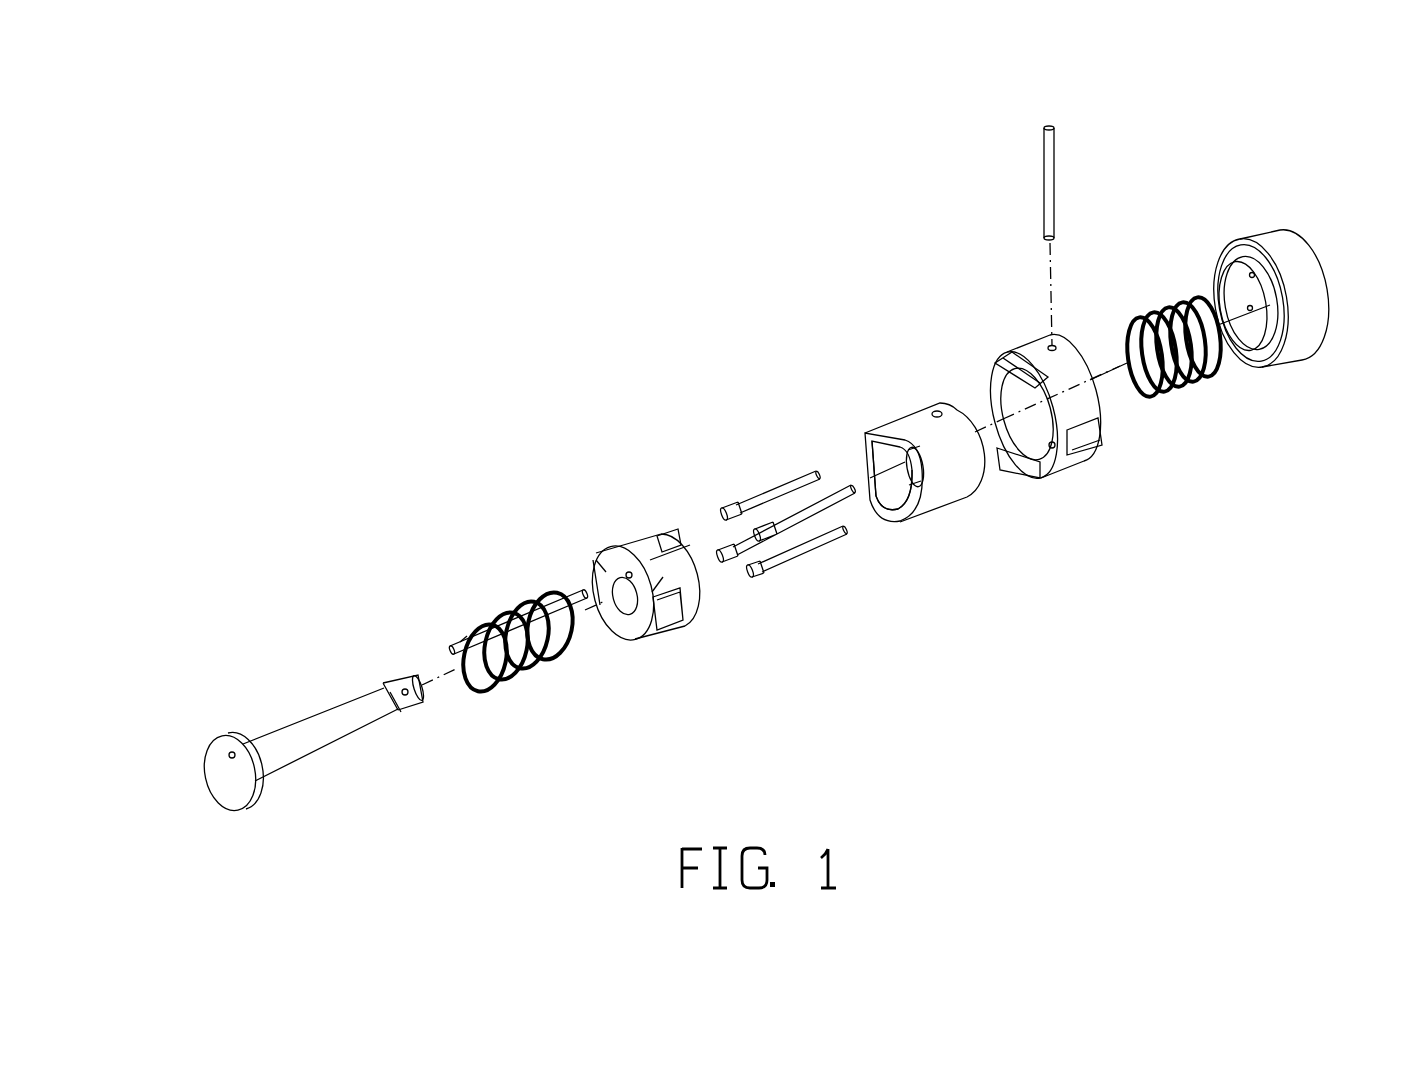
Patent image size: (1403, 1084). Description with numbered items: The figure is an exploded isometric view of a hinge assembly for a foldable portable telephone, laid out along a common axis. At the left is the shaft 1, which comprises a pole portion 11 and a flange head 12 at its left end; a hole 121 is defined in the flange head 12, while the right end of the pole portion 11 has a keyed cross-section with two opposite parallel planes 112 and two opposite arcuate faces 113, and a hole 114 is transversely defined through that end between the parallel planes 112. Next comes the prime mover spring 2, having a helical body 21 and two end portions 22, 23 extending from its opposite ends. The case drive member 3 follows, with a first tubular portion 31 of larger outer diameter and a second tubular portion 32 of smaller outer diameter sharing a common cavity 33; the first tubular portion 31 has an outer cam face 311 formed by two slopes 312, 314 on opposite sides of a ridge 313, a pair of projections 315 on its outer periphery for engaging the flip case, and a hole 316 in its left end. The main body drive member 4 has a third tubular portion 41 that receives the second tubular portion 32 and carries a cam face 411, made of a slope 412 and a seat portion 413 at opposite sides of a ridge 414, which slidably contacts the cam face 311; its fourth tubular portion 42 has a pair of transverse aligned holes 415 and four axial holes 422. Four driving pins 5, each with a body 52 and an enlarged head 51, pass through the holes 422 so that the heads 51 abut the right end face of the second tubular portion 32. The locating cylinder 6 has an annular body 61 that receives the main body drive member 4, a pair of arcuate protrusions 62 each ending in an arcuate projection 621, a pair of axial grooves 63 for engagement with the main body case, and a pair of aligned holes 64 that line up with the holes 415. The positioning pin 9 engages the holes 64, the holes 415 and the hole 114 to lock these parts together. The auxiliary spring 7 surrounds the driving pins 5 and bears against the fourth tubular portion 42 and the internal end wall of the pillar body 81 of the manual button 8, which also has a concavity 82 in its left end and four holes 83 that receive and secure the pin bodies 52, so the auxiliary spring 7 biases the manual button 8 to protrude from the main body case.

The shaft 1 is at (296, 706).
The pole portion 11 is at (360, 700).
The parallel planes 112 is at (422, 698).
The arcuate faces 113 is at (402, 710).
The hole 114 is at (404, 689).
The flange head 12 is at (192, 800).
The hole 121 is at (206, 768).
The prime mover spring 2 is at (546, 685).
The helical body 21 is at (512, 680).
The end portion 22 is at (465, 645).
The end portion 23 is at (573, 592).
The case drive member 3 is at (606, 537).
The first tubular portion 31 is at (662, 617).
The cam face 311 is at (656, 494).
The slope 312 is at (658, 540).
The ridge 313 is at (701, 521).
The slope 314 is at (640, 548).
The projections 315 is at (675, 612).
The hole 316 is at (592, 560).
The second tubular portion 32 is at (690, 577).
The cavity 33 is at (618, 607).
The main body drive member 4 is at (880, 418).
The third tubular portion 41 is at (915, 428).
The cam face 411 is at (912, 546).
The slope 412 is at (952, 533).
The seat portion 413 is at (880, 496).
The ridge 414 is at (873, 510).
The holes 415 is at (937, 408).
The fourth tubular portion 42 is at (868, 457).
The holes 422 is at (915, 472).
The driving pins 5 is at (772, 480).
The head 51 is at (770, 578).
The body 52 is at (805, 480).
The locating cylinder 6 is at (1117, 413).
The annular body 61 is at (1073, 365).
The arcuate protrusions 62 is at (984, 309).
The arcuate projection 621 is at (1007, 348).
The axial grooves 63 is at (1090, 432).
The holes 64 is at (1053, 345).
The auxiliary spring 7 is at (1180, 300).
The manual button 8 is at (1318, 365).
The pillar body 81 is at (1290, 262).
The concavity 82 is at (1251, 347).
The holes 83 is at (1216, 262).
The positioning pin 9 is at (1048, 125).